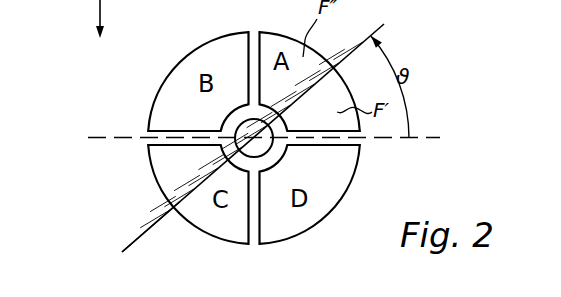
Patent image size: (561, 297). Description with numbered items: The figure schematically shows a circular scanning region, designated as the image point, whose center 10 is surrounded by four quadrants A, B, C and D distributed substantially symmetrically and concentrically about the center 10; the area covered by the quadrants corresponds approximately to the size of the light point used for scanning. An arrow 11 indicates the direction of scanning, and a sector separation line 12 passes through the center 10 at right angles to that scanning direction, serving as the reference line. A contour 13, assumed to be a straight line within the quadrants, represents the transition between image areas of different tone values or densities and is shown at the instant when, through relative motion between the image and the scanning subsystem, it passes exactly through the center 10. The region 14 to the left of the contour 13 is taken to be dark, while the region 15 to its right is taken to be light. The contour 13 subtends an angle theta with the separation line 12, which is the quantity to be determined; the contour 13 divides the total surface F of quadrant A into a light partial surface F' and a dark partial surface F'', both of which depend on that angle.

The center 10 is at (227, 119).
The arrow 11 is at (101, 1).
The sector separation line 12 is at (103, 133).
The contour 13 is at (385, 24).
The region 14 is at (138, 222).
The region 15 is at (162, 230).